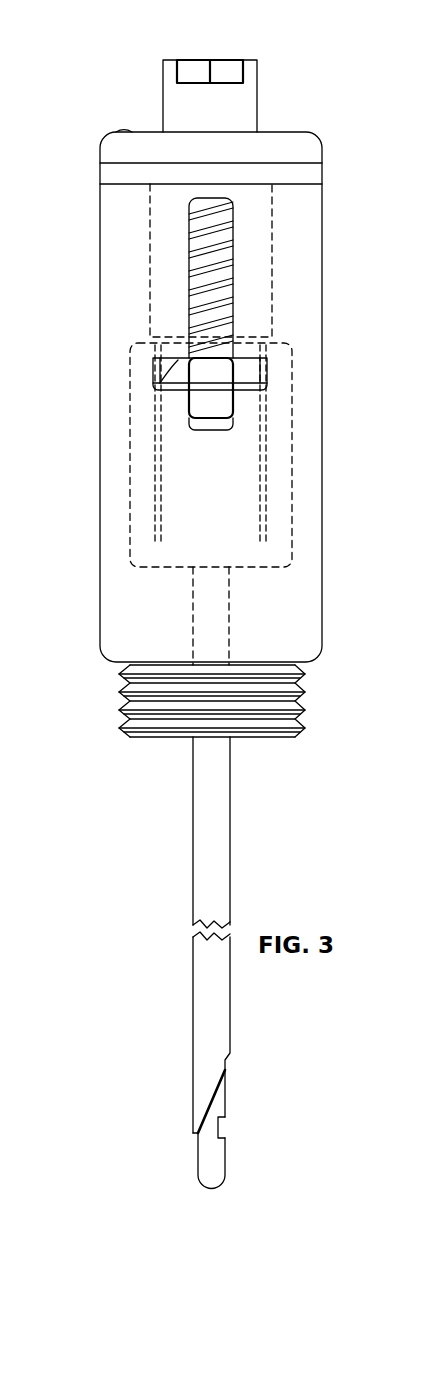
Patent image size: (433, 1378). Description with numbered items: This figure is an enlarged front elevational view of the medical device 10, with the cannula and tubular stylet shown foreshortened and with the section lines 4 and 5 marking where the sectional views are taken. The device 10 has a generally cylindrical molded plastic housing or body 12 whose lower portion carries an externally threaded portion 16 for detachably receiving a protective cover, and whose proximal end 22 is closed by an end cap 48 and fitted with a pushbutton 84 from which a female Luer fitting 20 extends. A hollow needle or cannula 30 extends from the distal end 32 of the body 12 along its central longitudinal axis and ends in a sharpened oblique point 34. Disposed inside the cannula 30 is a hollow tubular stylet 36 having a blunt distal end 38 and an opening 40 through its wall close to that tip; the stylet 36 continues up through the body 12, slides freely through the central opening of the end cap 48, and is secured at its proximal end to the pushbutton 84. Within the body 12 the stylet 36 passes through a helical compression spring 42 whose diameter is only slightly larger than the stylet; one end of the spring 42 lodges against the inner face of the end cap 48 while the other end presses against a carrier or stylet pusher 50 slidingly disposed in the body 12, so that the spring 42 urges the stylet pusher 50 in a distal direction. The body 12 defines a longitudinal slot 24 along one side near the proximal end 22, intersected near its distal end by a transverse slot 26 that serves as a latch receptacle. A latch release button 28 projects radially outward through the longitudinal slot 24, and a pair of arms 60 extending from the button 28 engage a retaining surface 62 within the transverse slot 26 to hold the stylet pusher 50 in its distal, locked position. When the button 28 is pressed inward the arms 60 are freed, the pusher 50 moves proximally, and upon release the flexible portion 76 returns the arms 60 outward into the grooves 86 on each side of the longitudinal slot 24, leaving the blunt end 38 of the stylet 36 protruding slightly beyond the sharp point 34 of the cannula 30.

The section line 4- 4 is at (158, 20).
The section line 5- 5 is at (46, 410).
The medical device 10 is at (72, 148).
The housing or body 12 is at (322, 472).
The externally threaded portion 16 is at (119, 698).
The female Luer fitting 20 is at (257, 72).
The proximal end 22 is at (322, 200).
The longitudinal slot 24 is at (189, 218).
The transverse slot 26 is at (426, 390).
The latch release button 28 is at (207, 404).
The cannula 30 is at (193, 835).
The distal end 32 is at (263, 737).
The oblique point 34 is at (193, 1137).
The tubular stylet 36 is at (233, 280).
The blunt distal end 38 is at (215, 1180).
The opening 40 is at (218, 1128).
The helical compression spring 42 is at (233, 228).
The end cap 48 is at (322, 172).
The stylet pusher 50 is at (130, 458).
The arms 60 is at (250, 372).
The retaining surface 62 is at (153, 386).
The flexible portion 76 is at (158, 515).
The pushbutton 84 is at (286, 132).
The grooves 86 is at (150, 274).